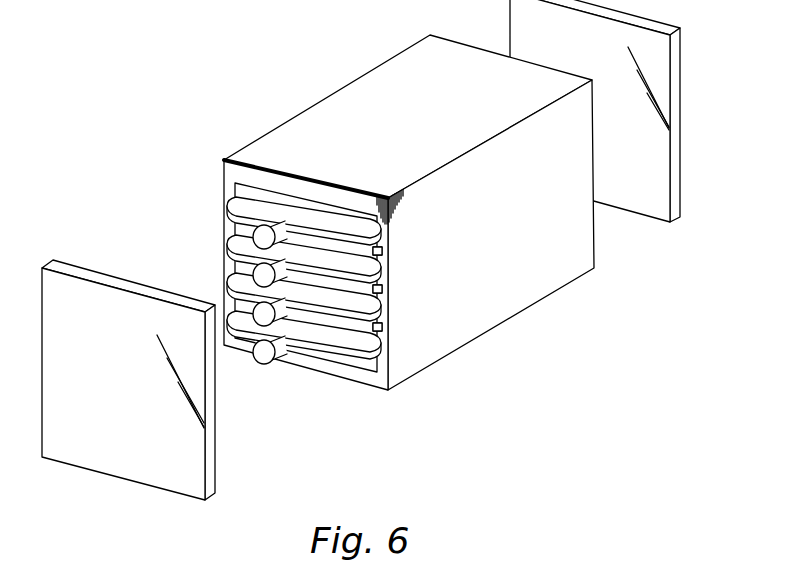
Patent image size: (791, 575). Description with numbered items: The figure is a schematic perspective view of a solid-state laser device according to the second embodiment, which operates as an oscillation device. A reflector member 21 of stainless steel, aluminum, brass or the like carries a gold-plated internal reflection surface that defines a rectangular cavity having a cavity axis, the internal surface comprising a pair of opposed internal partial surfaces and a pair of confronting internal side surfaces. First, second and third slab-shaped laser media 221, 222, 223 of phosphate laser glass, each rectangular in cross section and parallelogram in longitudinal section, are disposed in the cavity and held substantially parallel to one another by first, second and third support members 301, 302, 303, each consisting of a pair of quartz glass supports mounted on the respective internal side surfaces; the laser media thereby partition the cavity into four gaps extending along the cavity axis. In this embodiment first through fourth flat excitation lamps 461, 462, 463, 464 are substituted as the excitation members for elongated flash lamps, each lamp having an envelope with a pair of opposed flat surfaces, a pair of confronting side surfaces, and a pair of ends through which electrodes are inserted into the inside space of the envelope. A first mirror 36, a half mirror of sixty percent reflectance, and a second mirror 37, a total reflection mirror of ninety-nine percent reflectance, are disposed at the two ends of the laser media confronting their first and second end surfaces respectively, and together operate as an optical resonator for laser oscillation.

The reflector member 21 is at (518, 300).
The first mirror 36 is at (213, 455).
The second mirror 37 is at (678, 180).
The first flat excitation lamp 461 is at (302, 232).
The second flat excitation lamp 462 is at (330, 247).
The third flat excitation lamp 463 is at (307, 310).
The fourth flat excitation lamp 464 is at (334, 357).
The first slab-shaped laser medium 221 is at (385, 249).
The second slab-shaped laser medium 222 is at (385, 287).
The third slab-shaped laser medium 223 is at (385, 325).
The first support member 301 is at (390, 250).
The second support member 302 is at (390, 288).
The third support member 303 is at (390, 326).